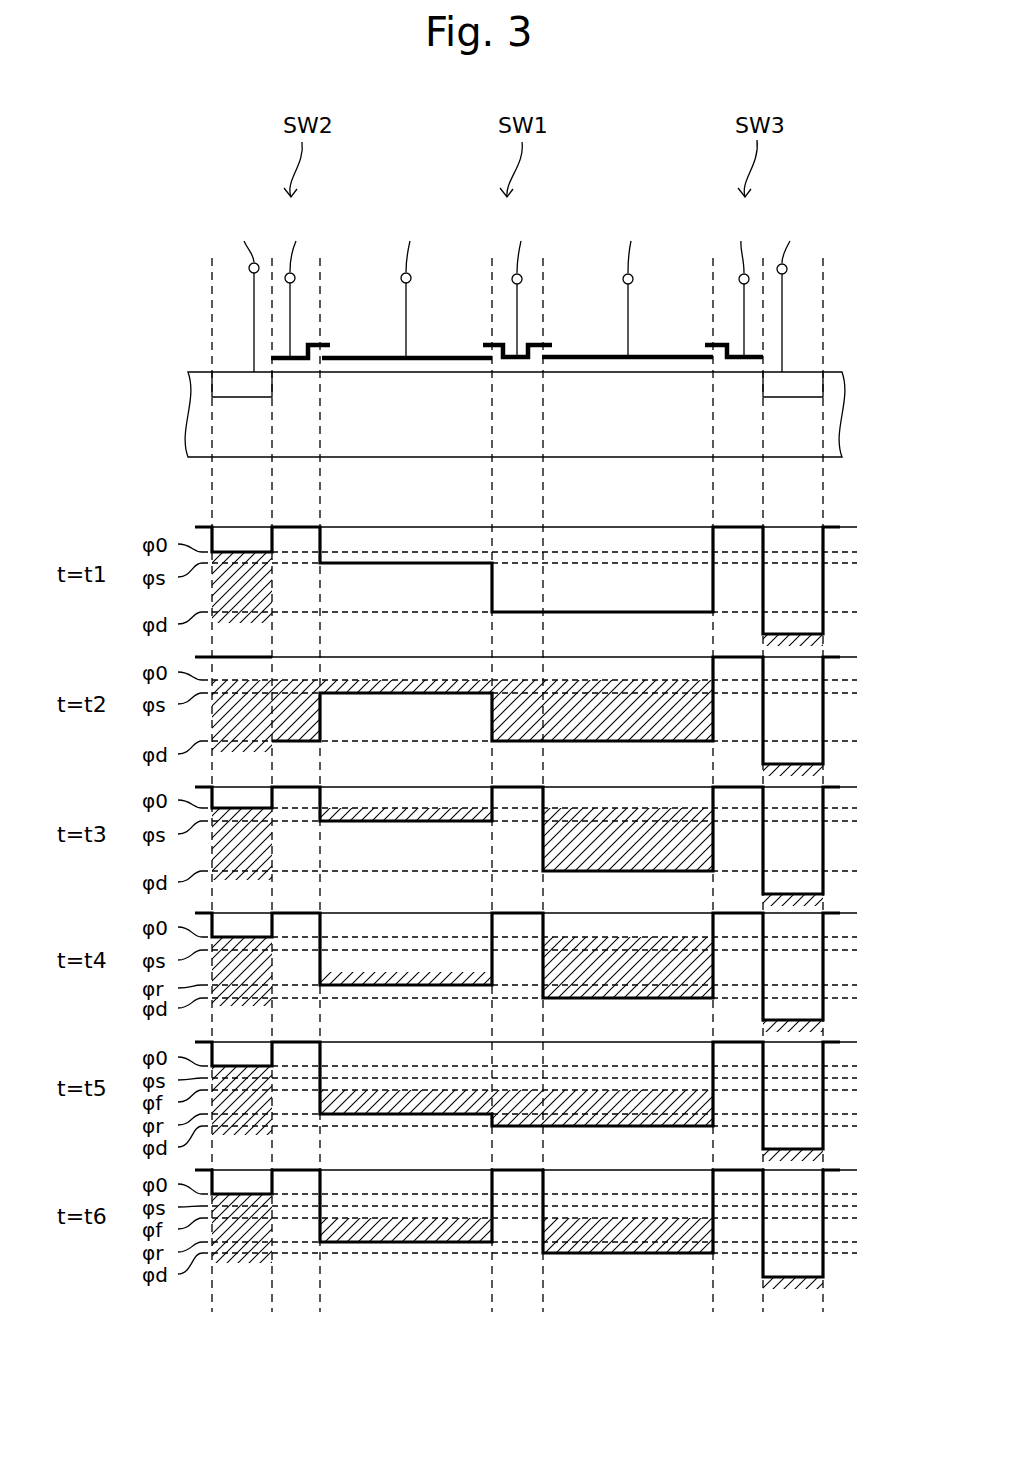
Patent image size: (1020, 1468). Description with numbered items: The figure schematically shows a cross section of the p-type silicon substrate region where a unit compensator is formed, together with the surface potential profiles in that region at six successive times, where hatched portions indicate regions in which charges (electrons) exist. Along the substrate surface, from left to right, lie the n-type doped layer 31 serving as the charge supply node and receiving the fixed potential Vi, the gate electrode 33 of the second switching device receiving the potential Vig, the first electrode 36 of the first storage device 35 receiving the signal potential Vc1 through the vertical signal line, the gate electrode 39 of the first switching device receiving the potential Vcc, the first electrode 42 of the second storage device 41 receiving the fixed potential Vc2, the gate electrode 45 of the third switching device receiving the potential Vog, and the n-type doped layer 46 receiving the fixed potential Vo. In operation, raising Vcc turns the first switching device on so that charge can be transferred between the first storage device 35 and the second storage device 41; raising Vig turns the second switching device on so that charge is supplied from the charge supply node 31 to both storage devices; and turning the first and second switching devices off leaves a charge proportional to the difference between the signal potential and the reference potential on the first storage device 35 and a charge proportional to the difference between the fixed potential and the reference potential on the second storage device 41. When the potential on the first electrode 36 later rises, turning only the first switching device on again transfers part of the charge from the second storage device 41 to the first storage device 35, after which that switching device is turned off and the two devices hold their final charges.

The n-type doped layer 31 is at (227, 385).
The gate electrode 33 is at (280, 356).
The first storage device 35 is at (405, 178).
The first electrode 36 is at (372, 356).
The gate electrode 39 is at (492, 343).
The second storage device 41 is at (625, 178).
The first electrode 42 is at (590, 355).
The gate electrode 45 is at (733, 344).
The n-type doped layer 46 is at (810, 378).